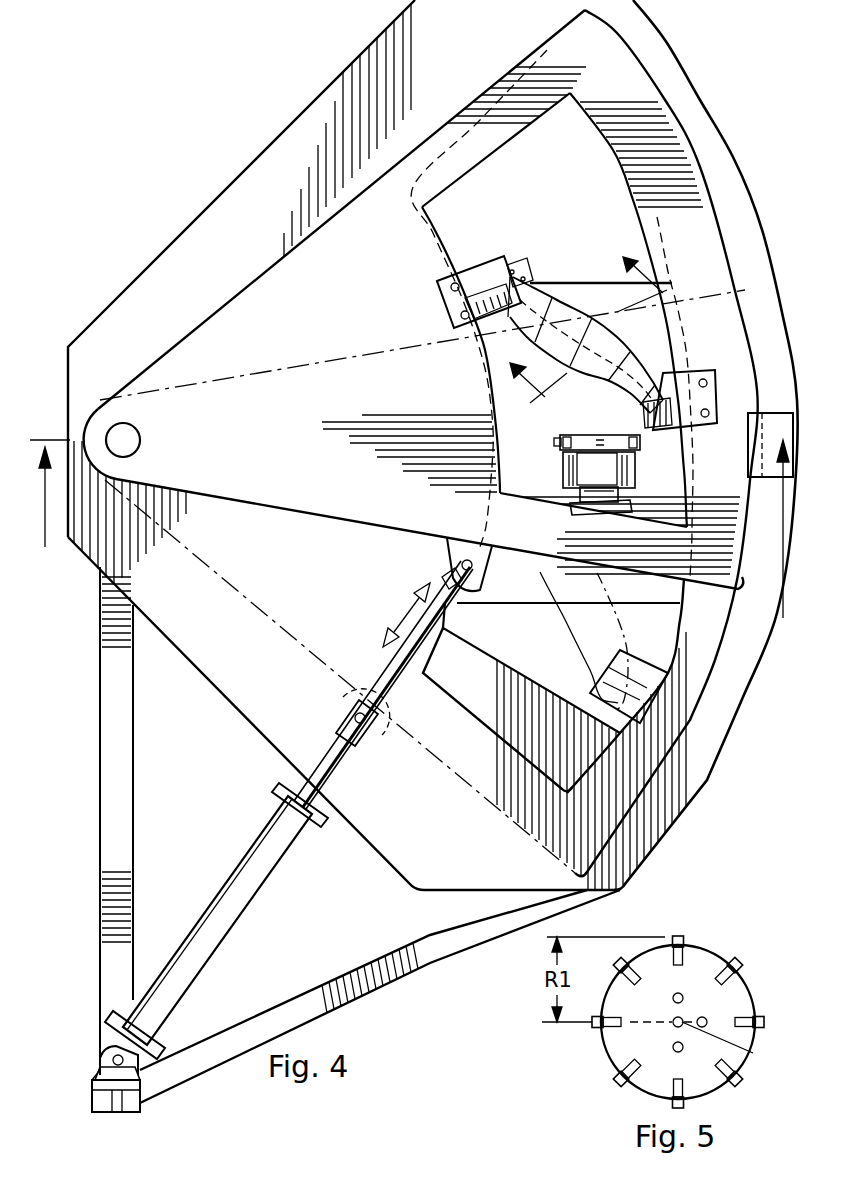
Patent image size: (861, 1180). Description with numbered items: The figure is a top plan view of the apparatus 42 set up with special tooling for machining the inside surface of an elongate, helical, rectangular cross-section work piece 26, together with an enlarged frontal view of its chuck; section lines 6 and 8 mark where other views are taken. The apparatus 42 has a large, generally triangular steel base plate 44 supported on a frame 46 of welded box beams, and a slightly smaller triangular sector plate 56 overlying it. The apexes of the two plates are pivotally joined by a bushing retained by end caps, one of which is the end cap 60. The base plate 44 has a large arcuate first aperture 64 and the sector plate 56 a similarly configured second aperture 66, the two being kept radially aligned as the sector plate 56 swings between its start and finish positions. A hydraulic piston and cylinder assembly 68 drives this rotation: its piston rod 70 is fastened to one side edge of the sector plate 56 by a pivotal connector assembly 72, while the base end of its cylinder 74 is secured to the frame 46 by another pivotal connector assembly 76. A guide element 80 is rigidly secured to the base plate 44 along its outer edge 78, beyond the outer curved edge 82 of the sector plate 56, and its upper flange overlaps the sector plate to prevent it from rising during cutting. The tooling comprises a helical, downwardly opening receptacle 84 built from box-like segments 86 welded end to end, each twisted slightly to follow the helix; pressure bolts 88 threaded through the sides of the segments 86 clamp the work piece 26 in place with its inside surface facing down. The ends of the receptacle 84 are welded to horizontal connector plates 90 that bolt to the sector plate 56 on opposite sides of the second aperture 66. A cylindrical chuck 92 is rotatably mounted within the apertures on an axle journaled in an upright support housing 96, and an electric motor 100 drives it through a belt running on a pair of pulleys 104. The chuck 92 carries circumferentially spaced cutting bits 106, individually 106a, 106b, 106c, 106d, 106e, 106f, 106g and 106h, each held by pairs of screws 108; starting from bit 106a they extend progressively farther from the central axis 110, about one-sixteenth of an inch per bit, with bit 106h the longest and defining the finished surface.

In FIG. 4, the work piece 26 is at (569, 337).
In FIG. 4, the apparatus 42 is at (455, 905).
In FIG. 4, the base plate 44 is at (400, 858).
In FIG. 4, the frame 46 is at (322, 975).
In FIG. 4, the sector plate 56 is at (243, 305).
In FIG. 4, the end cap 60 is at (140, 432).
In FIG. 4, the first aperture 64 is at (502, 663).
In FIG. 4, the second aperture 66 is at (500, 143).
In FIG. 4, the hydraulic piston and cylinder assembly 68 is at (270, 825).
In FIG. 4, the piston rod 70 is at (393, 677).
In FIG. 4, the pivotal connector assembly 72 is at (458, 550).
In FIG. 4, the cylinder 74 is at (222, 920).
In FIG. 4, the pivotal connector assembly 76 is at (120, 1040).
In FIG. 4, the outer edge 78 is at (758, 247).
In FIG. 4, the guide element 80 is at (770, 430).
In FIG. 4, the outer curved edge 82 is at (723, 220).
In FIG. 4, the receptacle 84 is at (567, 622).
In FIG. 4, the box-like segments 86 is at (613, 343).
In FIG. 4, the pressure bolts 88 is at (520, 293).
In FIG. 4, the connector plates 90 is at (440, 285).
In FIG. 4, the cylindrical chuck 92 is at (588, 436).
In FIG. 5, the cylindrical chuck 92 is at (700, 955).
In FIG. 4, the support housing 96 is at (565, 466).
In FIG. 4, the electric motor 100 is at (625, 507).
In FIG. 4, the pulleys 104 is at (580, 496).
In FIG. 4, the cutting bits 106 is at (556, 441).
In FIG. 5, the cutting bit 106a is at (738, 957).
In FIG. 5, the cutting bit 106b is at (762, 1017).
In FIG. 5, the cutting bit 106c is at (737, 1082).
In FIG. 5, the cutting bit 106d is at (672, 1102).
In FIG. 5, the cutting bit 106e is at (617, 1077).
In FIG. 5, the cutting bit 106f is at (592, 1022).
In FIG. 5, the cutting bit 106g is at (620, 960).
In FIG. 5, the cutting bit 106h is at (678, 937).
In FIG. 5, the screws 108 is at (715, 982).
In FIG. 5, the central axis 110 is at (737, 1046).
In FIG. 4, the section line 6- 6 is at (410, 543).
In FIG. 4, the section line 8- 8 is at (581, 318).